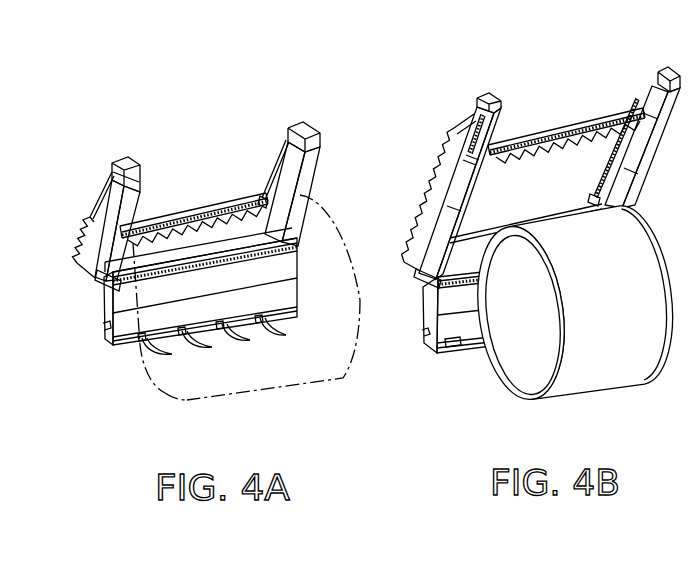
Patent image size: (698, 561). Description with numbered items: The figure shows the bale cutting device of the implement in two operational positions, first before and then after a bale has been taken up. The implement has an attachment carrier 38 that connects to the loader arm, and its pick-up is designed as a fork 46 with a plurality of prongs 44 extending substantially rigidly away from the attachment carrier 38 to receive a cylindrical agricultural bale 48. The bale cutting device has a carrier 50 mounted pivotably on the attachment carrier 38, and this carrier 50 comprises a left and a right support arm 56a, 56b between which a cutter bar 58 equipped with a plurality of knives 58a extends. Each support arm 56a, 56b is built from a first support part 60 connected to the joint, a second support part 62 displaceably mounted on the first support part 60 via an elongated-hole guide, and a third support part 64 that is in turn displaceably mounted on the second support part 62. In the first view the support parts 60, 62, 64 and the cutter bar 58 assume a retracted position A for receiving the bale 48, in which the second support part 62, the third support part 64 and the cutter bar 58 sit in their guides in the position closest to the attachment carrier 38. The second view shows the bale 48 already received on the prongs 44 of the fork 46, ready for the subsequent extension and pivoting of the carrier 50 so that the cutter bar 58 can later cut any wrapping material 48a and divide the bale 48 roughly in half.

In FIG. 4A, the attachment carrier 38 is at (250, 360).
In FIG. 4A, the prongs 44 is at (248, 290).
In FIG. 4A, the fork 46 is at (153, 355).
In FIG. 4A, the bale 48 is at (333, 222).
In FIG. 4A, the wrapping material 48a is at (367, 353).
In FIG. 4A, the carrier 50 is at (325, 133).
In FIG. 4A, the left support arm 56a is at (291, 126).
In FIG. 4A, the right support arm 56b is at (125, 158).
In FIG. 4A, the cutter bar 58 is at (184, 228).
In FIG. 4B, the cutter bar 58 is at (557, 128).
In FIG. 4B, the knives 58a is at (555, 156).
In FIG. 4A, the first support part 60 is at (96, 278).
In FIG. 4A, the second support part 62 is at (94, 218).
In FIG. 4A, the third support part 64 is at (118, 170).
In FIG. 4A, the retracted position A is at (309, 122).